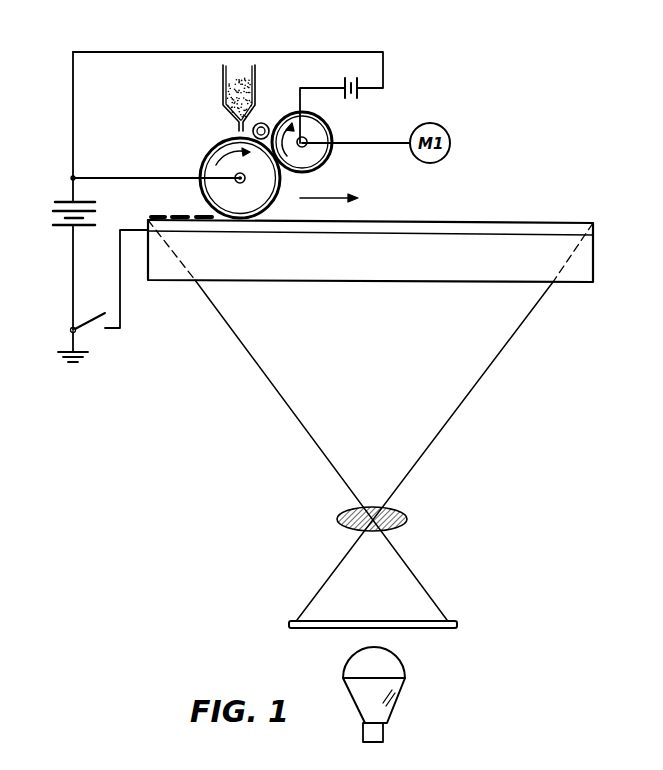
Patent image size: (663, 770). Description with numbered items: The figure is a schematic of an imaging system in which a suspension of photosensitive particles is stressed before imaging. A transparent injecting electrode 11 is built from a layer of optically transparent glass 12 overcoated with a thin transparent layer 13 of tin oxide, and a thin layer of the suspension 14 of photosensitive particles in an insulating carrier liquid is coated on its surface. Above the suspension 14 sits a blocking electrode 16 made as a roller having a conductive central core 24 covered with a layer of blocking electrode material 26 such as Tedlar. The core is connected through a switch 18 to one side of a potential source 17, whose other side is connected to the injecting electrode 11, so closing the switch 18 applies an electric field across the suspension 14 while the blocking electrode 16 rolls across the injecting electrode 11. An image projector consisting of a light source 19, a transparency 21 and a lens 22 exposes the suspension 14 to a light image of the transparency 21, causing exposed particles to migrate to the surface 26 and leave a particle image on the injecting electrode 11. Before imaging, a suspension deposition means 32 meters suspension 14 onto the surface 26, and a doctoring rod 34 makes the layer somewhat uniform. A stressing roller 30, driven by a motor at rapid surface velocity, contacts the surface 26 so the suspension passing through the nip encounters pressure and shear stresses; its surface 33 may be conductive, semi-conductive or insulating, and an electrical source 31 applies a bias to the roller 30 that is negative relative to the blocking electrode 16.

The transparent electrode 11 is at (624, 238).
The layer of optically transparent glass 12 is at (594, 282).
The optically transparent layer of tin oxide 13 is at (548, 226).
The suspension 14 is at (243, 87).
The blocking electrode 16 is at (200, 197).
The potential source 17 is at (60, 200).
The switch 18 is at (100, 316).
The light source 19 is at (392, 705).
The transparency 21 is at (458, 626).
The lens 22 is at (408, 519).
The conductive central core 24 is at (215, 150).
The layer of blocking electrode material 26 is at (206, 168).
The stressing roller 30 is at (336, 150).
The electrical source 31 is at (316, 49).
The suspension deposition means 32 is at (222, 112).
The surface of the roller 33 is at (338, 133).
The doctoring rod 34 is at (262, 124).